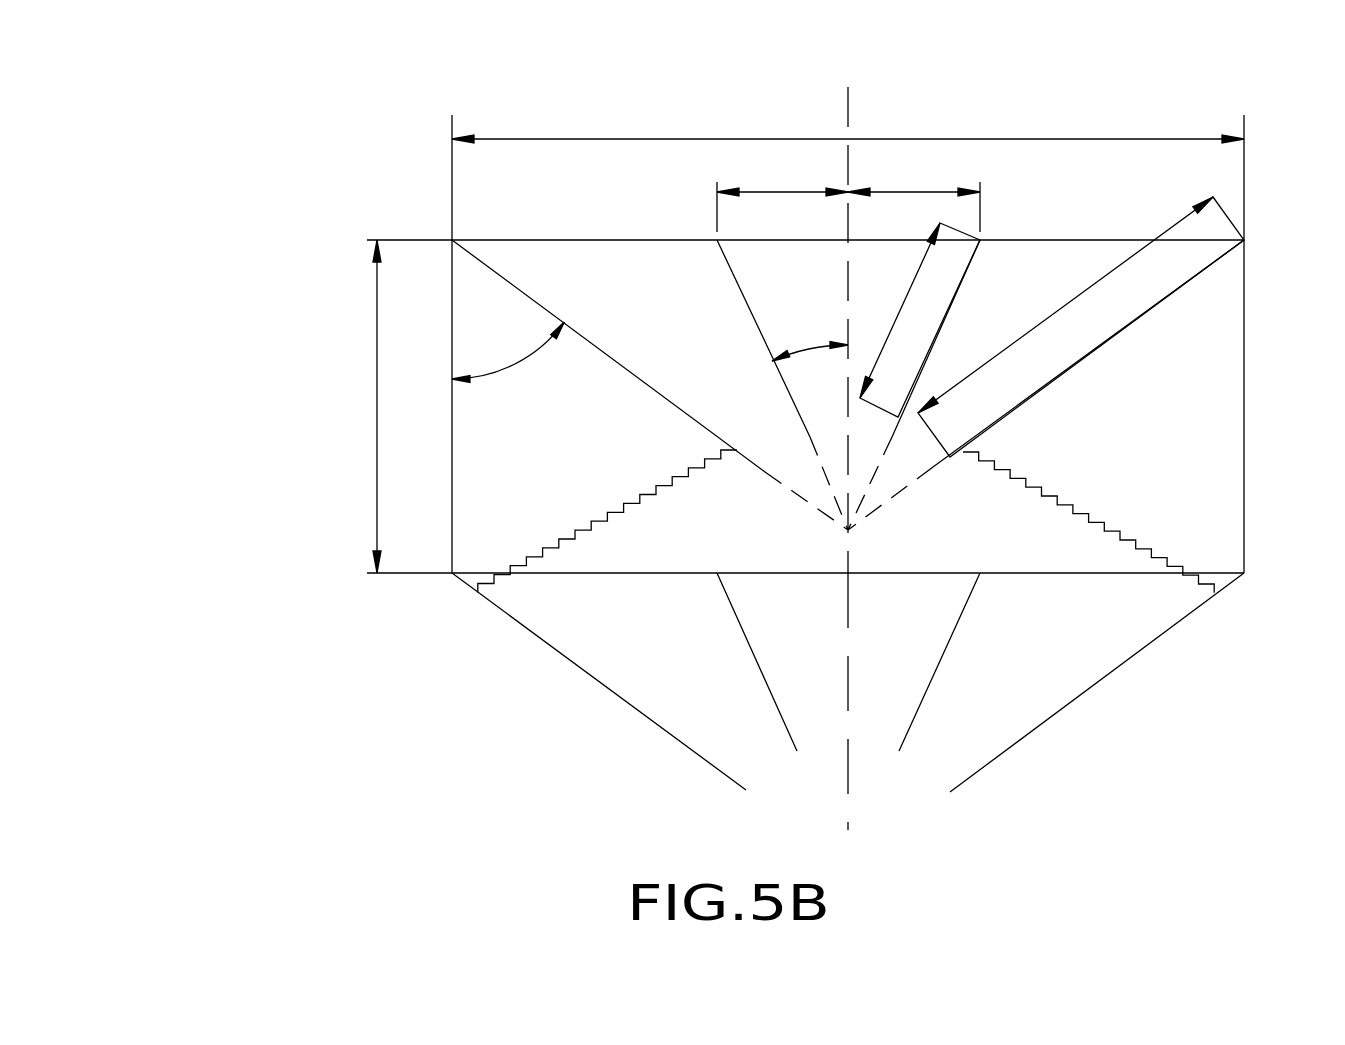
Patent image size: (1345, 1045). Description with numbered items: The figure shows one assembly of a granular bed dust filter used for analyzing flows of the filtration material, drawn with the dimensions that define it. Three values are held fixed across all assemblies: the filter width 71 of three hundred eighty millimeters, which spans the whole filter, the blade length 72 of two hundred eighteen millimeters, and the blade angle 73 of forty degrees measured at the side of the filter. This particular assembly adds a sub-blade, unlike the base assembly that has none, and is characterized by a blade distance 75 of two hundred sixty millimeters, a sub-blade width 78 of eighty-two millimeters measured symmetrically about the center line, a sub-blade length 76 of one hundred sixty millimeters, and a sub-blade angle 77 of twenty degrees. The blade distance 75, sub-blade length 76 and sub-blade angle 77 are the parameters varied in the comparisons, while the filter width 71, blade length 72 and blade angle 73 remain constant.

The filter width 71 is at (848, 89).
The blade length 72 is at (1119, 335).
The blade angle 73 is at (417, 305).
The blade distance 75 is at (259, 406).
The sub-blade length 76 is at (1006, 352).
The sub-blade angle 77 is at (737, 308).
The sub-blade width 78 is at (816, 138).